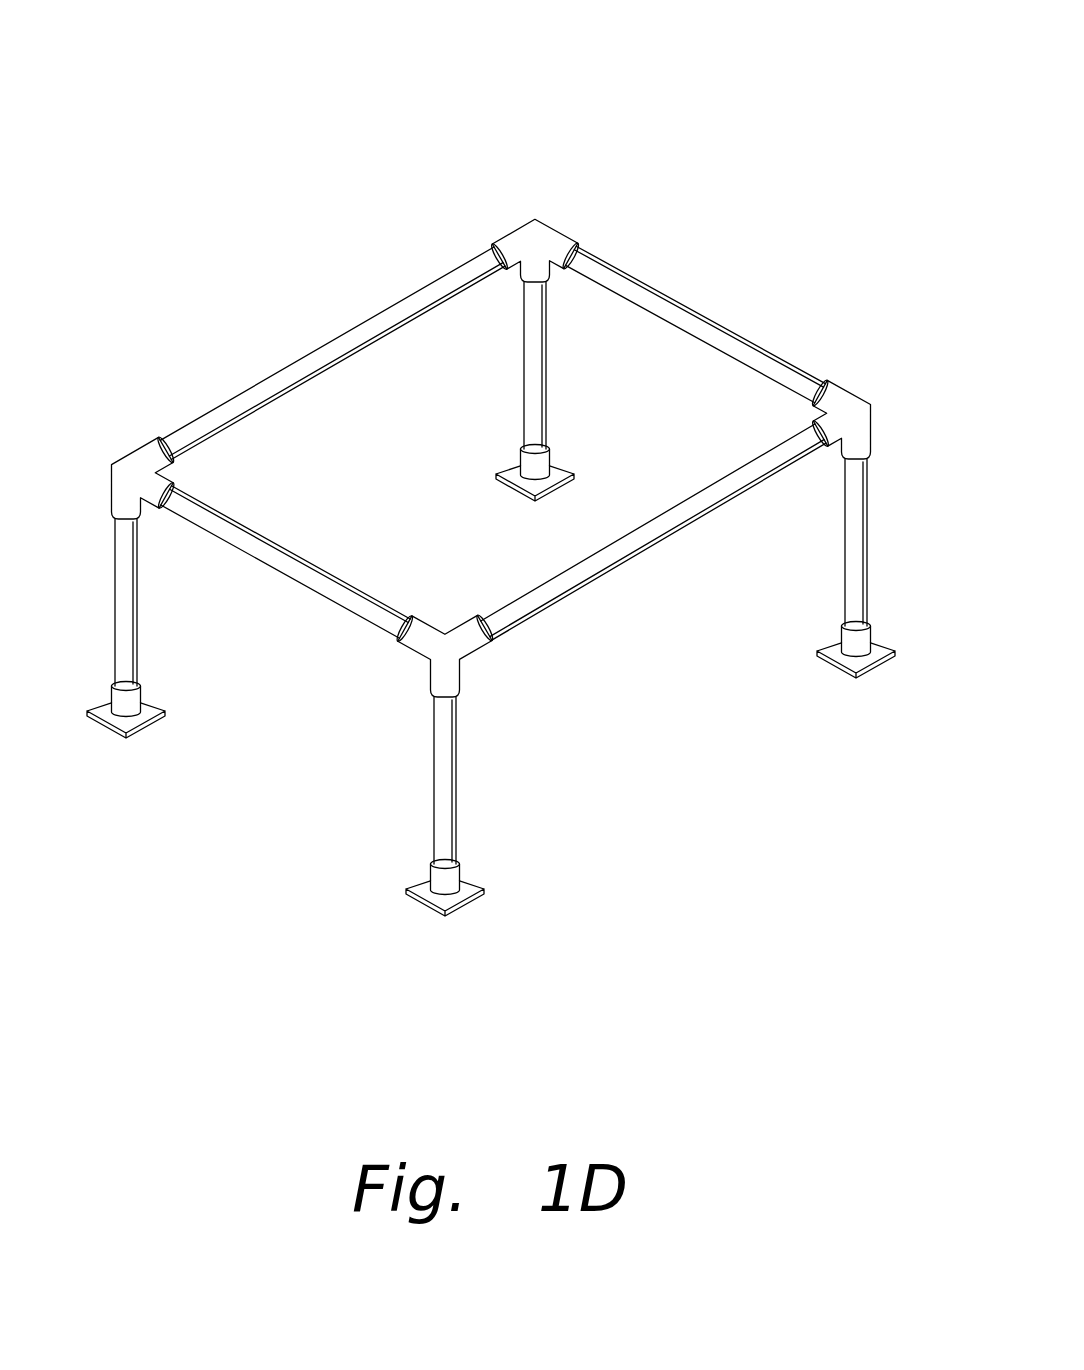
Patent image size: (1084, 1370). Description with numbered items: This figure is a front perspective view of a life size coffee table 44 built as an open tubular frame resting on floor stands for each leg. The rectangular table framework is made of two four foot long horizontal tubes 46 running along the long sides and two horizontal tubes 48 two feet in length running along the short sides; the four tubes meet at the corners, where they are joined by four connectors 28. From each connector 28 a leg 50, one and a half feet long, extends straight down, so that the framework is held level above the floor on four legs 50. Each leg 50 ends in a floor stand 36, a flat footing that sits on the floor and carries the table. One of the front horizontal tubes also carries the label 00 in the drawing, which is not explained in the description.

The life size coffee table 44 is at (278, 115).
The connectors 28 is at (535, 222).
The horizontal tubes 46 is at (335, 335).
The horizontal tubes 48 is at (700, 305).
The front rail 00 is at (312, 554).
The legs 50 is at (521, 376).
The floor stands 36 is at (556, 460).